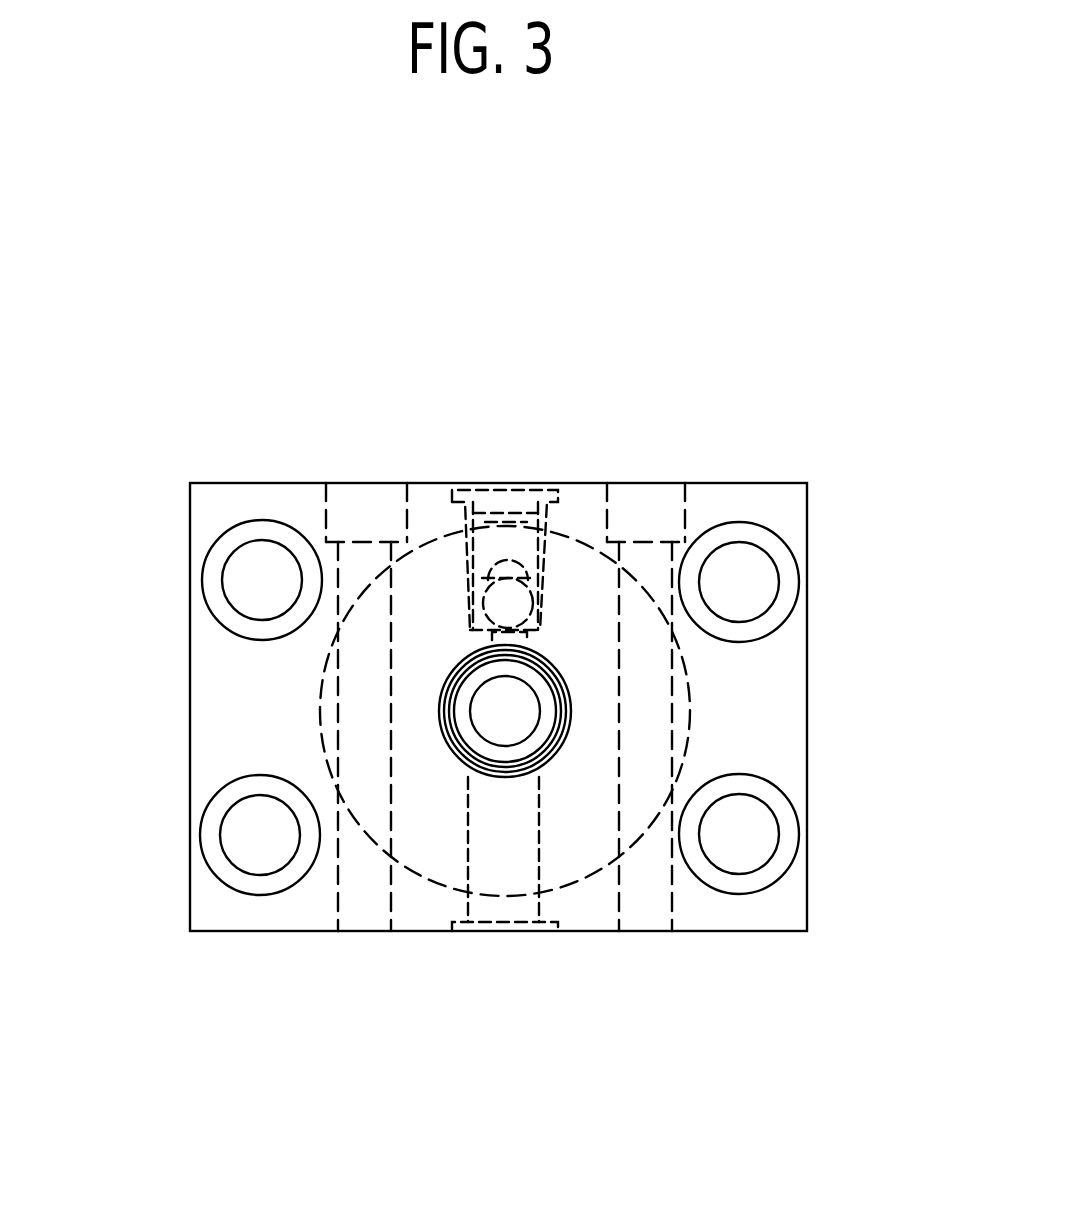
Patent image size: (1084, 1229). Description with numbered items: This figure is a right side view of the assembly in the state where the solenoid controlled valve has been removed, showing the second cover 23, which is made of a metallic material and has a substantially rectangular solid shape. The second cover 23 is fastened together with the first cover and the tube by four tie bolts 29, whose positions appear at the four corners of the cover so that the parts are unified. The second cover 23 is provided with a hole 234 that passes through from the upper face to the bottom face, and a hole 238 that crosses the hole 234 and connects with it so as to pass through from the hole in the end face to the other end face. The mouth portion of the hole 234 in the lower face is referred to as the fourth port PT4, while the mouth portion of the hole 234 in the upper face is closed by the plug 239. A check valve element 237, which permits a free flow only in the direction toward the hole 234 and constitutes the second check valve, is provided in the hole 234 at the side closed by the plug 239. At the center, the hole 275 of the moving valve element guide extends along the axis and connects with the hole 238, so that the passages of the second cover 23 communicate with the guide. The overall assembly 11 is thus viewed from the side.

The fuel injection system component 11 is at (529, 277).
The second cover 23 is at (757, 480).
The tie bolts 29 is at (253, 574).
The plug 239 is at (500, 482).
The check valve element 237 is at (557, 570).
The hole 275 is at (480, 737).
The hole 238 is at (475, 717).
The hole 234 is at (545, 924).
The fourth port PT4 is at (497, 931).